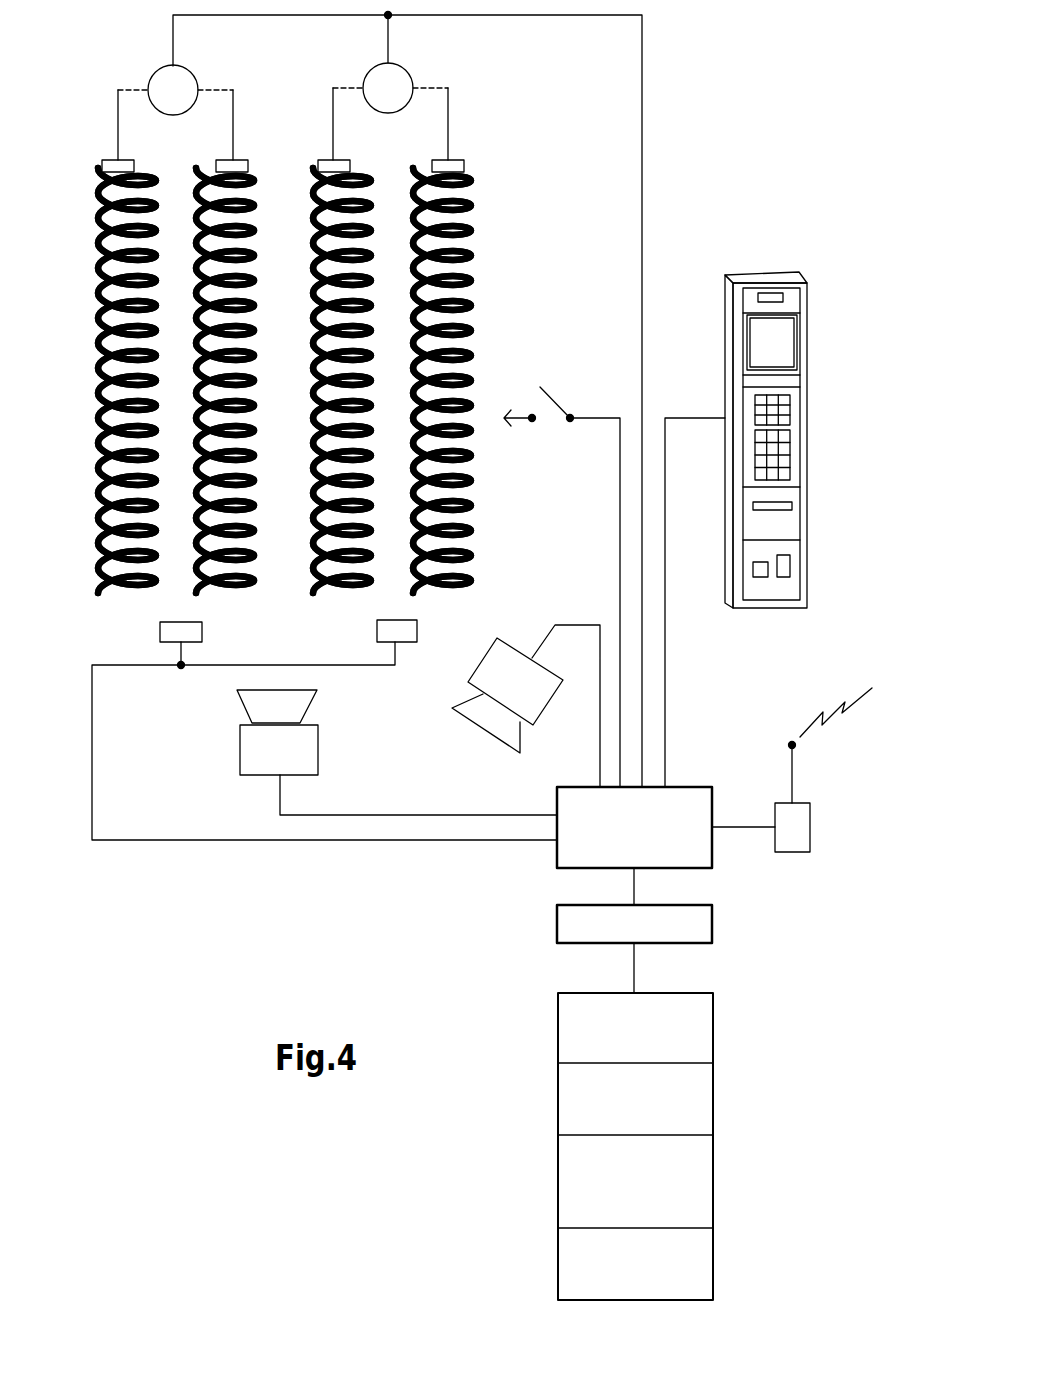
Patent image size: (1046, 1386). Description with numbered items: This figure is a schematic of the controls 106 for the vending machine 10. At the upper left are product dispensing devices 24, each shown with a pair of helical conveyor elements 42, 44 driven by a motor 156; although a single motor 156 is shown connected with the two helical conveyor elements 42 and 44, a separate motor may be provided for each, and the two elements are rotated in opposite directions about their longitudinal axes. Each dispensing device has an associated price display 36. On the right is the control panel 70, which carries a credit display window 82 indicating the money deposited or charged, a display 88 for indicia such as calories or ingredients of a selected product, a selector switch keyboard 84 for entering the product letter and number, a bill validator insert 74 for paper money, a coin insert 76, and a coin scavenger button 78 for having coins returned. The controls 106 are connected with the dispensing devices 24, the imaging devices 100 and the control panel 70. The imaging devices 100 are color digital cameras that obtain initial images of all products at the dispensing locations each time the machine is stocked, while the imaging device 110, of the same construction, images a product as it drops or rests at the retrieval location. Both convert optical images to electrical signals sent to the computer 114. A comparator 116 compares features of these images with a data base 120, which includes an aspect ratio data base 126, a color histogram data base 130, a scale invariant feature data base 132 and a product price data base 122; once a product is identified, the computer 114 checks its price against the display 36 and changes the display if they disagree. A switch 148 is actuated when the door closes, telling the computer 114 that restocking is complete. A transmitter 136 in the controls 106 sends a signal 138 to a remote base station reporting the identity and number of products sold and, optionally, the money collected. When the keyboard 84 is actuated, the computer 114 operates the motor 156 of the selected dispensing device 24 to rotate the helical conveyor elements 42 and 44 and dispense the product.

The vending machine 10 is at (752, 168).
The product dispensing device 24 is at (311, 346).
The display 36 is at (403, 632).
The helical conveyor element 42 is at (115, 585).
The helical conveyor element 44 is at (243, 583).
The control panel 70 is at (774, 529).
The bill validator insert 74 is at (787, 503).
The coin insert 76 is at (790, 565).
The coin scavenger button 78 is at (765, 572).
The credit display window 82 is at (785, 294).
The selector switch keyboard 84 is at (780, 413).
The display 88 is at (773, 340).
The imaging device 100 is at (290, 748).
The controls 106 is at (518, 960).
The imaging device 110 is at (520, 683).
The computer 114 is at (580, 850).
The comparator 116 is at (712, 937).
The data base 120 is at (659, 1146).
The product price data base 122 is at (695, 1265).
The aspect ratio data base 126 is at (690, 1027).
The color histogram data base 130 is at (700, 1090).
The scale invariant feature data base 132 is at (573, 1168).
The transmitter 136 is at (795, 825).
The signal 138 is at (842, 713).
The switch 148 is at (553, 400).
The motor 156 is at (190, 80).